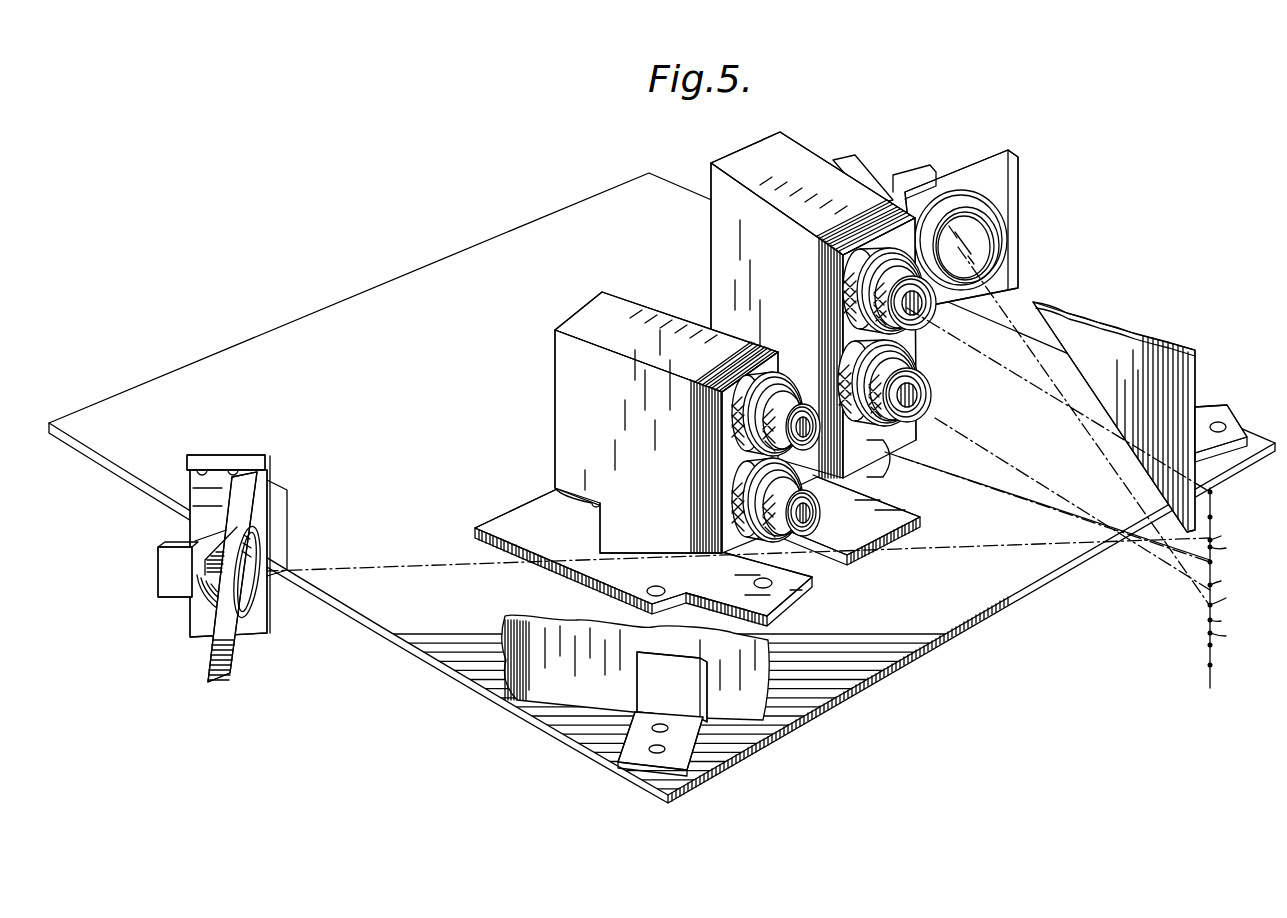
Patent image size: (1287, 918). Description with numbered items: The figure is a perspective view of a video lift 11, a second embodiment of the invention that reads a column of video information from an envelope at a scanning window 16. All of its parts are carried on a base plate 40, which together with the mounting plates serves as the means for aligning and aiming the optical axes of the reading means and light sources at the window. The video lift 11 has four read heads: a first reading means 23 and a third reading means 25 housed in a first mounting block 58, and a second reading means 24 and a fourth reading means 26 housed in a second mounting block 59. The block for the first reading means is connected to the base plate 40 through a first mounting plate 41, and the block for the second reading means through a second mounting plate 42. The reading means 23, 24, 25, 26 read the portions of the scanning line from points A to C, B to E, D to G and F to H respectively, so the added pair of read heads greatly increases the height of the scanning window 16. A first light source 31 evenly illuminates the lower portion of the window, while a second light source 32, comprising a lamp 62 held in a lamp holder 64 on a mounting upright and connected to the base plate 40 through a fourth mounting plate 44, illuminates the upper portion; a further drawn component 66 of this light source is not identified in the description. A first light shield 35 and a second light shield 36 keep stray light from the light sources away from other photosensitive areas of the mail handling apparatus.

The video lift 11 is at (983, 784).
The scanning window 16 is at (1224, 668).
The first reading means 23 is at (707, 525).
The second reading means 24 is at (945, 409).
The third reading means 25 is at (732, 424).
The fourth reading means 26 is at (947, 323).
The first light source 31 is at (1082, 167).
The second light source 32 is at (215, 604).
The first light shield 35 is at (1198, 386).
The second light shield 36 is at (518, 693).
The base plate 40 is at (380, 625).
The first mounting plate 41 is at (473, 527).
The second mounting plate 42 is at (905, 500).
The fourth mounting plate 44 is at (283, 497).
The first mounting block 58 is at (593, 503).
The second mounting block 59 is at (730, 297).
The lamp 62 is at (197, 598).
The lamp holder 64 is at (238, 647).
The lens plate 66 is at (270, 617).